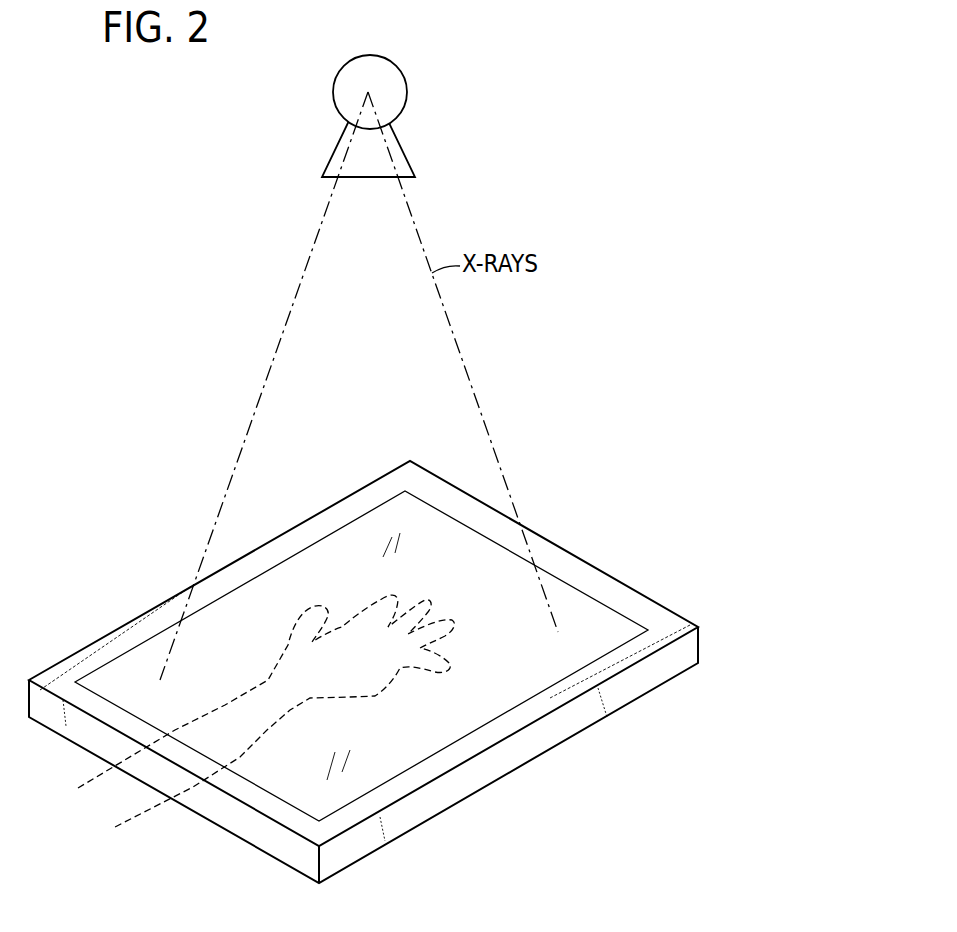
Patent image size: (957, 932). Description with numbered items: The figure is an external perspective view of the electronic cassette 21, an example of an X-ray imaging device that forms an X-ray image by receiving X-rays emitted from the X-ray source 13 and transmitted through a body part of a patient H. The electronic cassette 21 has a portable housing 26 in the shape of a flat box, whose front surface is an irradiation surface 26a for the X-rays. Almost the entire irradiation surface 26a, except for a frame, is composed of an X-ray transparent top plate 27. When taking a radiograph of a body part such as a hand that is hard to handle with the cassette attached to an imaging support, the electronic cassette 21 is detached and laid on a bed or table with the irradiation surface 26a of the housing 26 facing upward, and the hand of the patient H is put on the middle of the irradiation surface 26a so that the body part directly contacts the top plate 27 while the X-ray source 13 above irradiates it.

The X-ray source 13 is at (338, 77).
The electronic cassette 21 is at (363, 645).
The housing 26 is at (451, 808).
The irradiation surface 26a is at (575, 570).
The X-ray transparent top plate 27 is at (342, 542).
The patient H is at (145, 810).